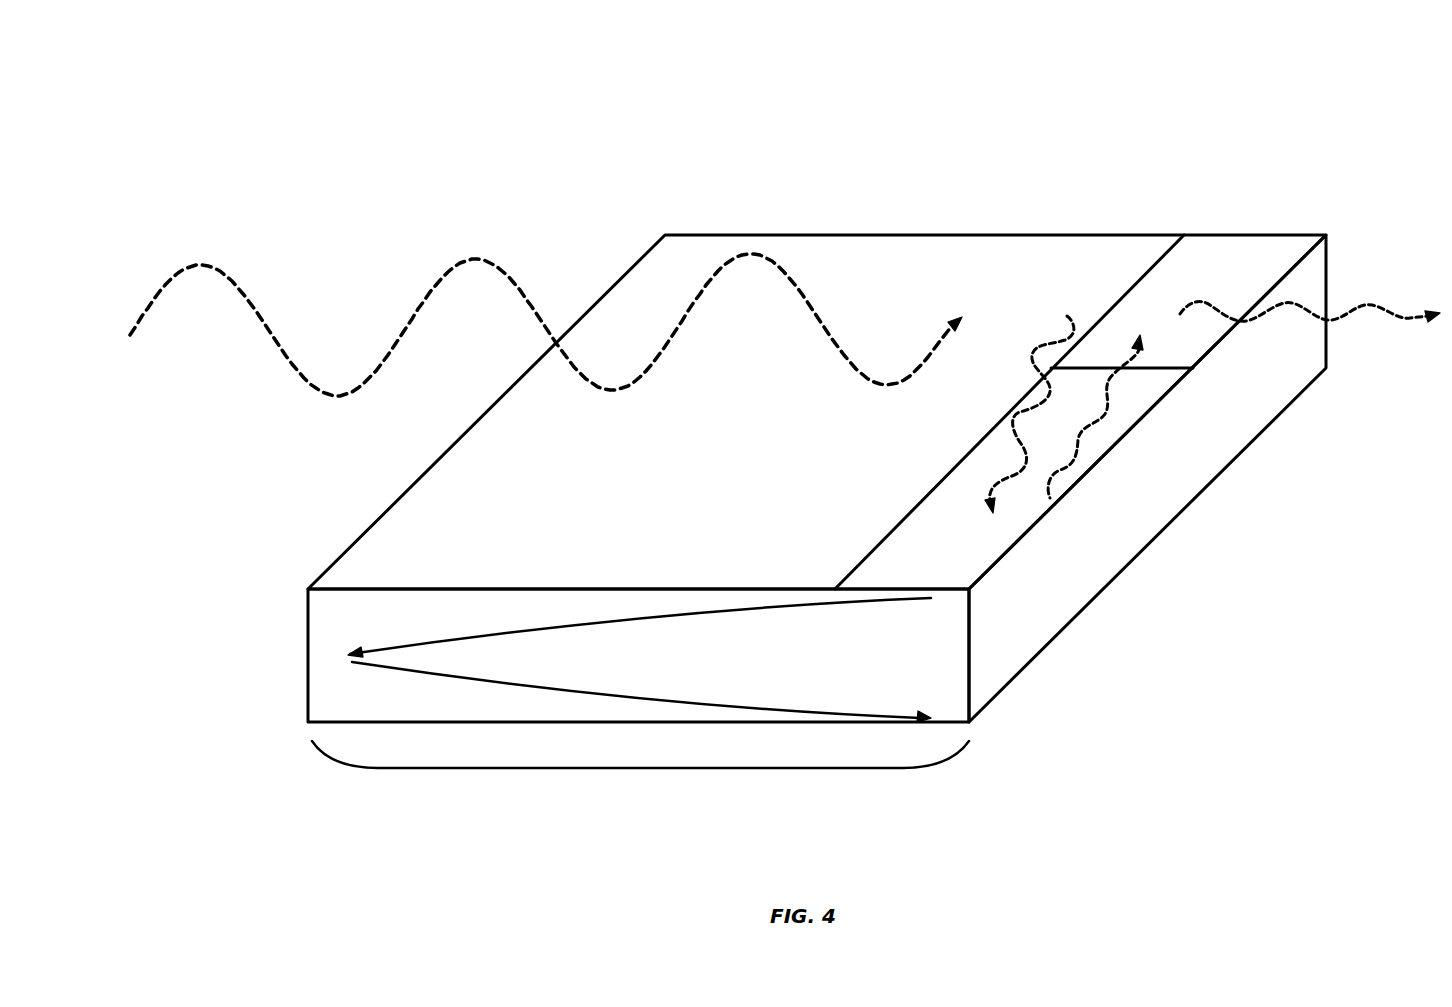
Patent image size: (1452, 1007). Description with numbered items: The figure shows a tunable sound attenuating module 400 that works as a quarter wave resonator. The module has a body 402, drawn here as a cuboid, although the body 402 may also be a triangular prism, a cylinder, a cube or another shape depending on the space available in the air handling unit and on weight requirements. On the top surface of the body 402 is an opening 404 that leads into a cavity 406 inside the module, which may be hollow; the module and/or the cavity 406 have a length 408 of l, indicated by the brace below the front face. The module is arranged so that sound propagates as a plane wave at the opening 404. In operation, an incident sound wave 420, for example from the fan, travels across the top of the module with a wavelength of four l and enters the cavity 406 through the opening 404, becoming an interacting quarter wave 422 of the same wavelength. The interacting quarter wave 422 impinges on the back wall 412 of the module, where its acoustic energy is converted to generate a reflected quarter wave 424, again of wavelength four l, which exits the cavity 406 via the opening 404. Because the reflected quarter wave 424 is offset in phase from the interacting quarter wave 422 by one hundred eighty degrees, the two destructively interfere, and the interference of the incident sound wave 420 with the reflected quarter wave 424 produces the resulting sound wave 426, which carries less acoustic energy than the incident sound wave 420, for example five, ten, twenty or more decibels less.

The tunable sound attenuating module 400 is at (200, 106).
The body 402 is at (672, 234).
The opening 404 is at (1200, 212).
The cavity 406 is at (1262, 258).
The length 408 is at (640, 768).
The back wall 412 is at (268, 667).
The incident sound wave 420 is at (412, 305).
The interacting quarter wave 422 is at (400, 645).
The reflected quarter wave 424 is at (402, 671).
The resulting sound wave 426 is at (1112, 400).